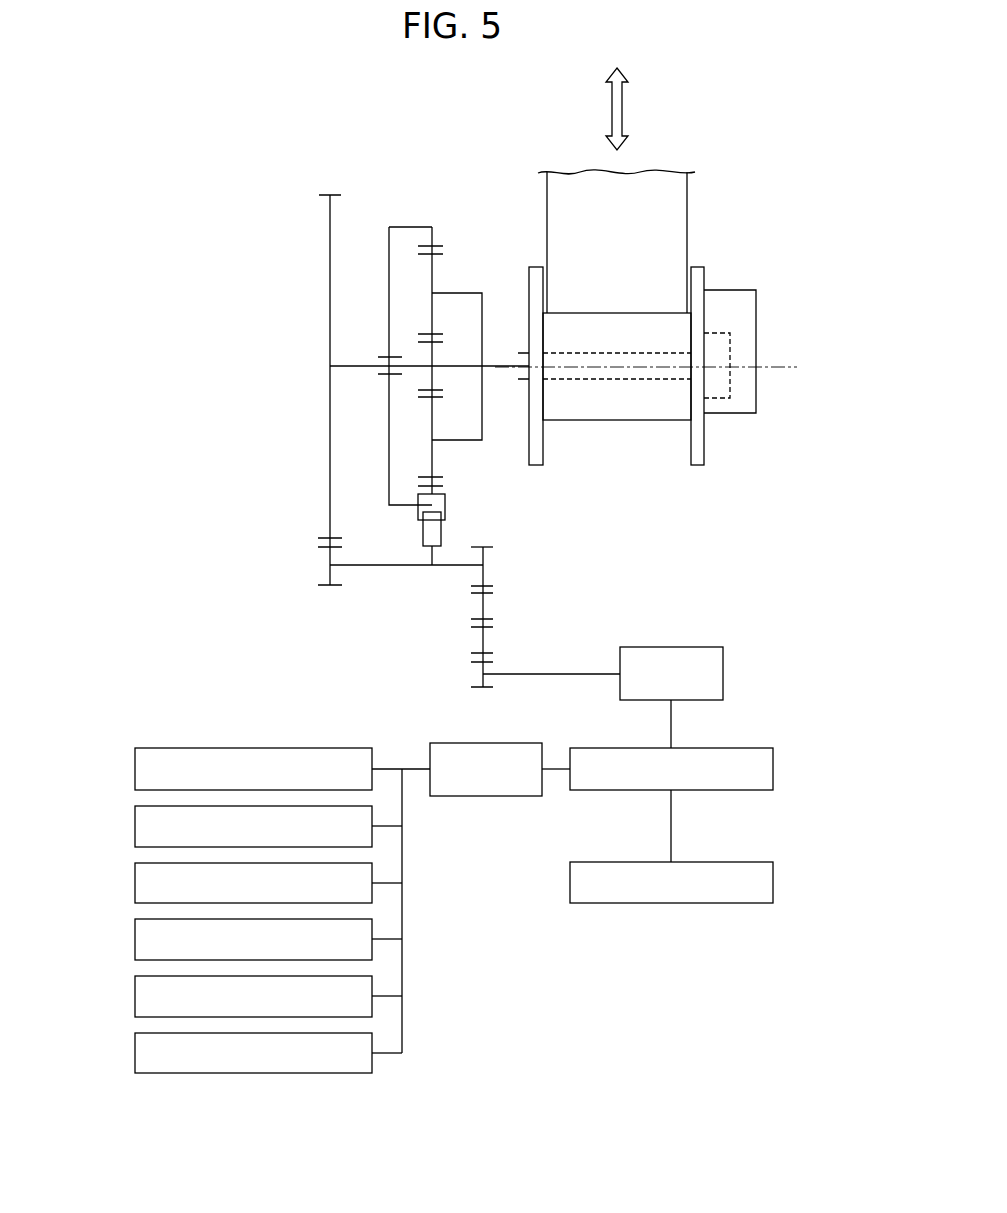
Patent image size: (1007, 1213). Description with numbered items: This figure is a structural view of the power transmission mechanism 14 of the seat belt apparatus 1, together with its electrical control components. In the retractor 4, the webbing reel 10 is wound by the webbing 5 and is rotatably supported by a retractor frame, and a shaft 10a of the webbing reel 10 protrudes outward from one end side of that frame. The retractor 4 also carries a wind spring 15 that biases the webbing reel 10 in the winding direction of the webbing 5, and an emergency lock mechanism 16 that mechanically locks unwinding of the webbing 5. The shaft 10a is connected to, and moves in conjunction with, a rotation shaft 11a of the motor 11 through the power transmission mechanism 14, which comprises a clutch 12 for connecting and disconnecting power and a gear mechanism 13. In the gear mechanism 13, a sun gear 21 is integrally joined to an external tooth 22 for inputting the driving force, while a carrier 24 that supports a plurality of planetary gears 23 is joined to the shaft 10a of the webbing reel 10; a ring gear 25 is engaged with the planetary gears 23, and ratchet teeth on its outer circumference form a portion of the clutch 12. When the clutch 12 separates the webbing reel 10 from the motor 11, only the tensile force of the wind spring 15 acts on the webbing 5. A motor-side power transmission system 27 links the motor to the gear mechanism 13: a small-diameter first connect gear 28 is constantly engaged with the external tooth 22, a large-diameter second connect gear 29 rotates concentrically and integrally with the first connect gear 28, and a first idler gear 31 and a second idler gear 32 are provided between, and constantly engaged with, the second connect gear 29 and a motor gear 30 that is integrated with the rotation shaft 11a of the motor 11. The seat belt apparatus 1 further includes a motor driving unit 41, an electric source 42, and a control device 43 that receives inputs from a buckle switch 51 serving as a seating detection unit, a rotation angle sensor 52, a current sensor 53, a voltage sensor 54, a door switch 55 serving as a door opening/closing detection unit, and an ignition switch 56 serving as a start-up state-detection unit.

The seat belt apparatus 1 is at (785, 545).
The retractor 4 is at (722, 275).
The webbing 5 is at (668, 213).
The webbing reel 10 is at (697, 467).
The shaft 10a is at (643, 383).
The motor 11 is at (723, 673).
The rotation shaft 11a is at (555, 680).
The clutch 12 is at (462, 526).
The gear mechanism 13 is at (430, 210).
The power transmission mechanism 14 is at (465, 165).
The wind spring 15 is at (730, 347).
The emergency lock mechanism 16 is at (747, 393).
The sun gear 21 is at (432, 377).
The external tooth 22 is at (330, 195).
The planetary gears 23 is at (432, 272).
The carrier 24 is at (453, 292).
The ring gear 25 is at (389, 438).
The motor-side power transmission system 27 is at (443, 600).
The first connect gear 28 is at (330, 570).
The second connect gear 29 is at (483, 557).
The motor gear 30 is at (479, 680).
The first idler gear 31 is at (483, 604).
The second idler gear 32 is at (483, 638).
The motor driving unit 41 is at (773, 769).
The electric source 42 is at (773, 883).
The control device 43 is at (483, 796).
The buckle switch 51 is at (135, 769).
The rotation angle sensor 52 is at (135, 826).
The current sensor 53 is at (135, 883).
The voltage sensor 54 is at (135, 939).
The door switch 55 is at (135, 996).
The ignition switch 56 is at (135, 1053).